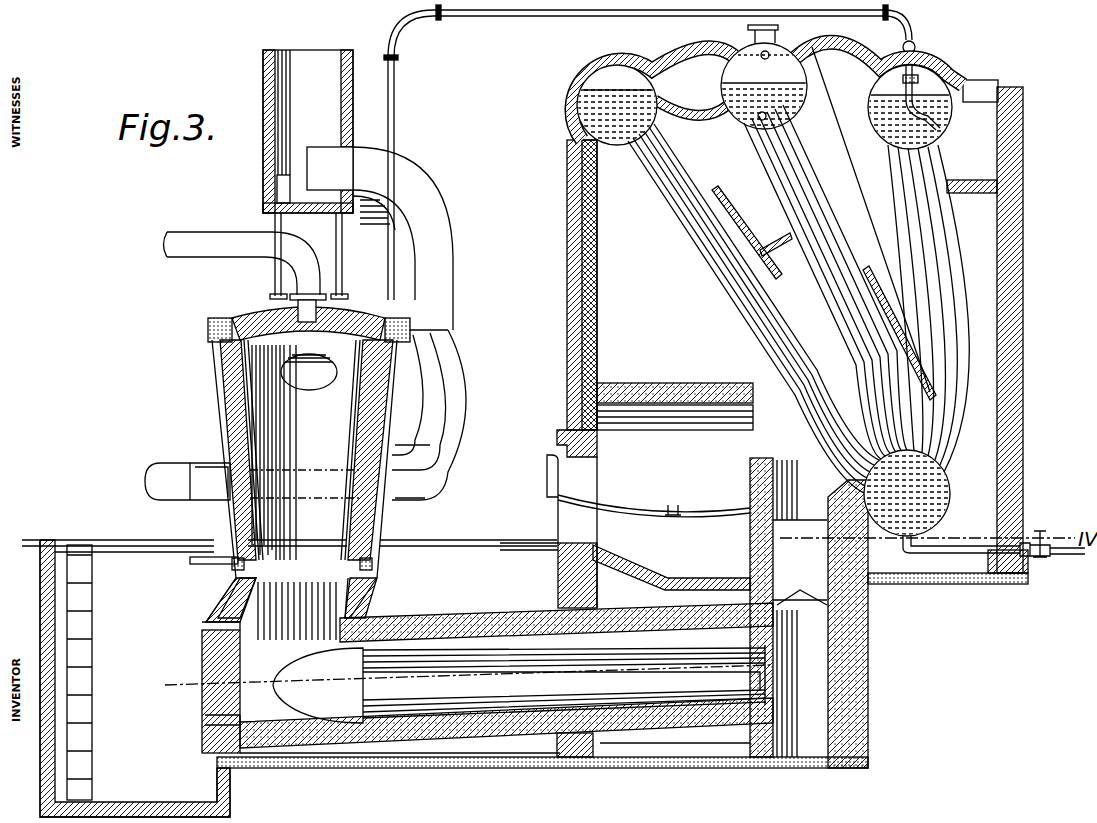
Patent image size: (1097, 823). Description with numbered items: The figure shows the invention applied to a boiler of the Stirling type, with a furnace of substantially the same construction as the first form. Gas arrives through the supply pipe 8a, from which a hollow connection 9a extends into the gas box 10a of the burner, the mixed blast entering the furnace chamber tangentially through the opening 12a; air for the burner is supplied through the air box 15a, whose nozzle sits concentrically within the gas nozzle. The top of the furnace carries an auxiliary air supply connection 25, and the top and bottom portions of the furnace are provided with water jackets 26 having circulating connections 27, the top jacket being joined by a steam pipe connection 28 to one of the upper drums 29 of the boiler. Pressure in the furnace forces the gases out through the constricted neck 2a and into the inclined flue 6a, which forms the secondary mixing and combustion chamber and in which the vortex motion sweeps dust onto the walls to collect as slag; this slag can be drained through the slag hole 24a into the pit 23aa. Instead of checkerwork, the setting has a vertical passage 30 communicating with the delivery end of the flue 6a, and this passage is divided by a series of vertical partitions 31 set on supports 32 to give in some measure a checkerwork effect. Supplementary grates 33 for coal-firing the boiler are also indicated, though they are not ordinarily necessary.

The constricted neck of the furnace 2a is at (271, 470).
The flue 6a is at (500, 685).
The gas supply pipe 8a is at (290, 78).
The hollow connection 9a is at (443, 234).
The gas box 10a is at (435, 362).
The opening 12a is at (318, 384).
The air box 15a is at (463, 384).
The pit 23aa is at (135, 678).
The slag hole 24a is at (212, 722).
The auxiliary air supply connection 25 is at (213, 243).
The water jacket 26 is at (210, 330).
The circulating connection 27 is at (205, 566).
The steam pipe connection 28 is at (394, 141).
The upper drum 29 is at (937, 84).
The vertical passage 30 is at (820, 653).
The vertical partition 31 is at (802, 532).
The support 32 is at (820, 600).
The supplementary grate 33 is at (690, 503).